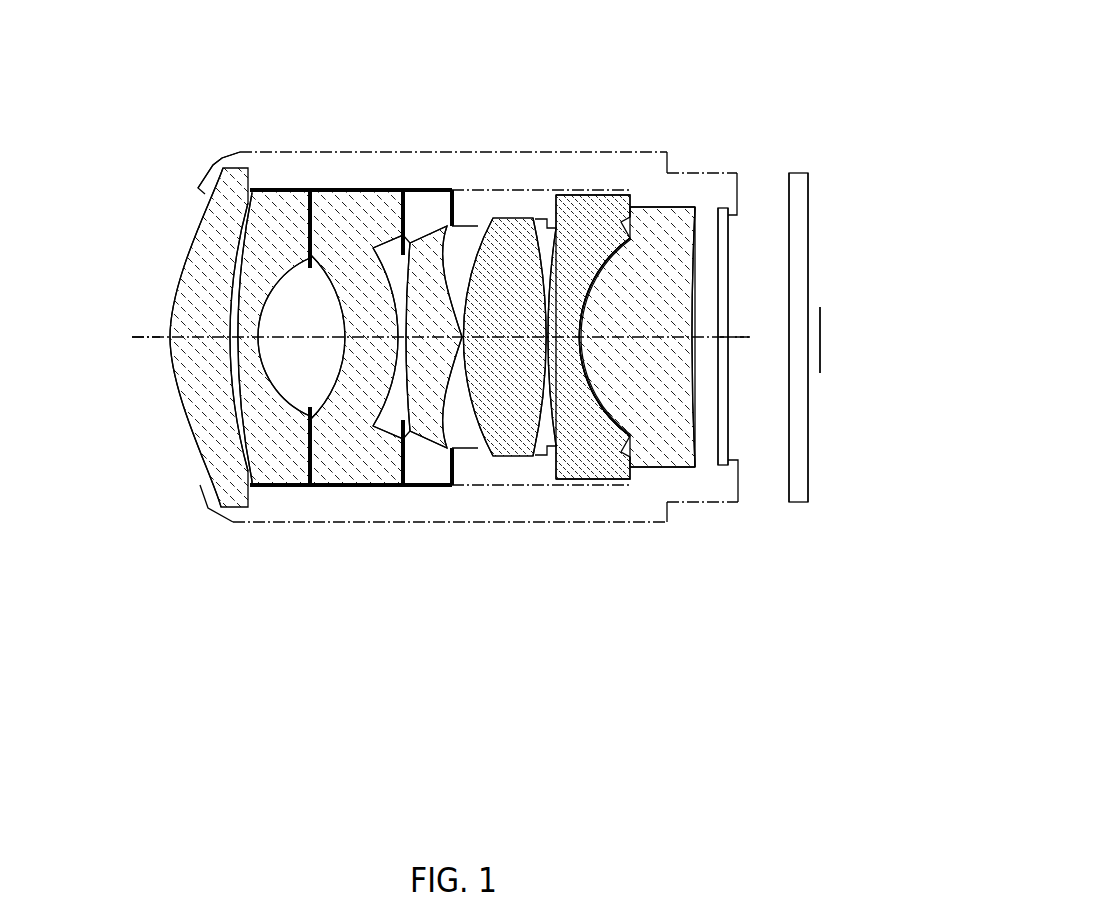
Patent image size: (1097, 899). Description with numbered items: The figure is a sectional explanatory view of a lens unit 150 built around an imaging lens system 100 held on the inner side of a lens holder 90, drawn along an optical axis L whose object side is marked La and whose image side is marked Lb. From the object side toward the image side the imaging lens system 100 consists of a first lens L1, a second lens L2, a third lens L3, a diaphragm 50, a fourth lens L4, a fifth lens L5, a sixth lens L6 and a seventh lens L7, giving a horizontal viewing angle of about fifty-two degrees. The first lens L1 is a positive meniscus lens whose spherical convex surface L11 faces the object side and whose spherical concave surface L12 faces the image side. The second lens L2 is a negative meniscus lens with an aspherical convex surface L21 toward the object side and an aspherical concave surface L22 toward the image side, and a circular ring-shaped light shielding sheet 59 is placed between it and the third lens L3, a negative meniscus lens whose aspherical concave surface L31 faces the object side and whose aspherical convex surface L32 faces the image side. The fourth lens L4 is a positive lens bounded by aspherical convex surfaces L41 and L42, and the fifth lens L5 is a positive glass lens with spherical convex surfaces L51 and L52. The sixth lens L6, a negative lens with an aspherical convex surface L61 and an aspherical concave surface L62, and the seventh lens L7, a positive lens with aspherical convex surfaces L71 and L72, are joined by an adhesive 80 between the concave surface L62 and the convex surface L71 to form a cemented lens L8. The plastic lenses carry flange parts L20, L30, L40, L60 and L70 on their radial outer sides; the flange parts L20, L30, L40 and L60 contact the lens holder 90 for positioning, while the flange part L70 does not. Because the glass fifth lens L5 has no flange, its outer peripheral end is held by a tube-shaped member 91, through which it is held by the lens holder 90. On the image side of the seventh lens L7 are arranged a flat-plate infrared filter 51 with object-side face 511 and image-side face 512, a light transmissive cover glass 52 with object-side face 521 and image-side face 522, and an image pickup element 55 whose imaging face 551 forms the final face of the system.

The imaging lens system 100 is at (138, 125).
The lens holder 90 is at (218, 158).
The tube-shaped member 91 is at (467, 225).
The lens unit 150 is at (730, 97).
The infrared filter 51 is at (728, 232).
The object-side face of the infrared filter 511 is at (718, 375).
The image-side face of the infrared filter 512 is at (728, 403).
The cover glass 52 is at (800, 173).
The object-side face of the cover glass 521 is at (789, 391).
The image-side face of the cover glass 522 is at (808, 408).
The image pickup element 55 is at (820, 307).
The imaging face 551 is at (820, 325).
The optical axis L is at (152, 337).
The object side La is at (129, 338).
The image side Lb is at (749, 328).
The first lens L1 is at (201, 210).
The convex surface of the first lens L11 is at (193, 237).
The concave surface of the first lens L12 is at (231, 287).
The second lens L2 is at (265, 197).
The flange part of the second lens L20 is at (286, 203).
The convex surface of the second lens L21 is at (236, 352).
The concave surface of the second lens L22 is at (262, 363).
The light shielding sheet 59 is at (307, 445).
The third lens L3 is at (342, 197).
The flange part of the third lens L30 is at (362, 200).
The concave surface of the third lens L31 is at (330, 400).
The convex surface of the third lens L32 is at (392, 430).
The diaphragm 50 is at (407, 487).
The fourth lens L4 is at (426, 215).
The flange part of the fourth lens L40 is at (442, 205).
The convex surface of the fourth lens L41 is at (410, 355).
The convex surface of the fourth lens L42 is at (461, 350).
The fifth lens L5 is at (522, 217).
The convex surface of the fifth lens L51 is at (466, 363).
The convex surface of the fifth lens L52 is at (547, 387).
The sixth lens L6 is at (580, 195).
The flange part of the sixth lens L60 is at (605, 210).
The convex surface of the sixth lens L61 is at (555, 372).
The concave surface of the sixth lens L62 is at (577, 360).
The adhesive 80 is at (585, 365).
The seventh lens L7 is at (650, 213).
The flange part of the seventh lens L70 is at (670, 217).
The convex surface of the seventh lens L71 is at (593, 372).
The convex surface of the seventh lens L72 is at (692, 385).
The cemented lens L8 is at (687, 92).